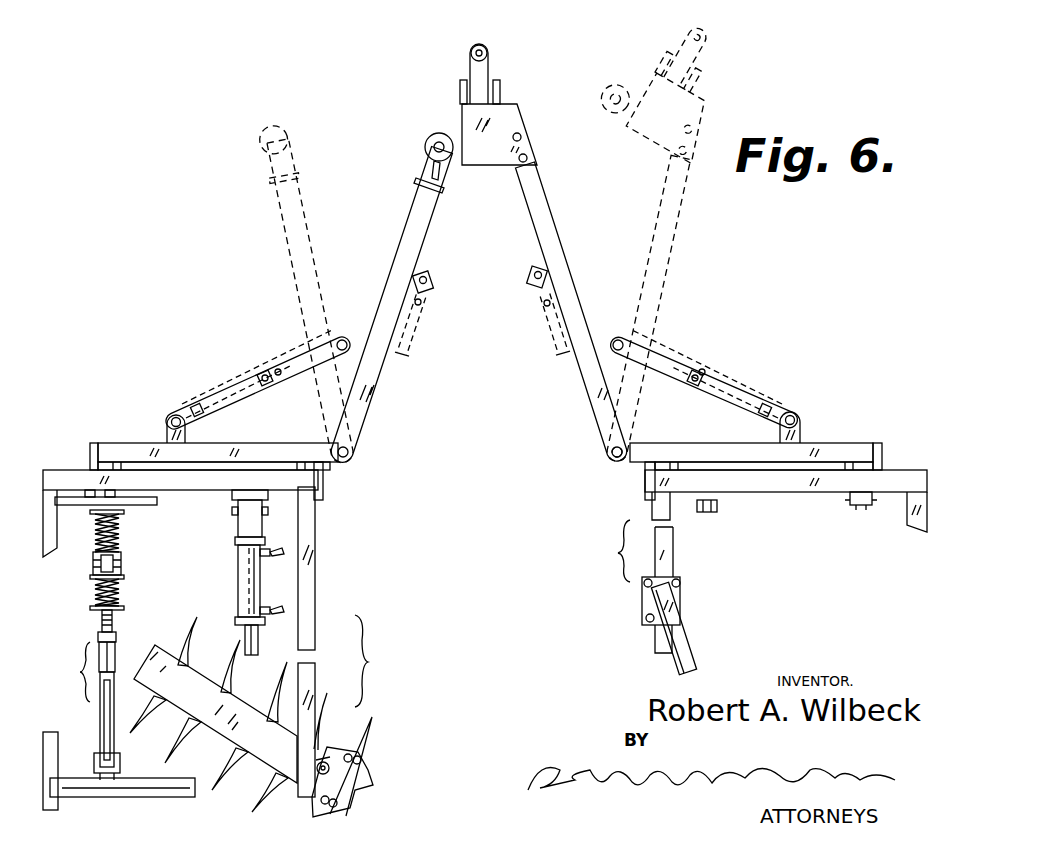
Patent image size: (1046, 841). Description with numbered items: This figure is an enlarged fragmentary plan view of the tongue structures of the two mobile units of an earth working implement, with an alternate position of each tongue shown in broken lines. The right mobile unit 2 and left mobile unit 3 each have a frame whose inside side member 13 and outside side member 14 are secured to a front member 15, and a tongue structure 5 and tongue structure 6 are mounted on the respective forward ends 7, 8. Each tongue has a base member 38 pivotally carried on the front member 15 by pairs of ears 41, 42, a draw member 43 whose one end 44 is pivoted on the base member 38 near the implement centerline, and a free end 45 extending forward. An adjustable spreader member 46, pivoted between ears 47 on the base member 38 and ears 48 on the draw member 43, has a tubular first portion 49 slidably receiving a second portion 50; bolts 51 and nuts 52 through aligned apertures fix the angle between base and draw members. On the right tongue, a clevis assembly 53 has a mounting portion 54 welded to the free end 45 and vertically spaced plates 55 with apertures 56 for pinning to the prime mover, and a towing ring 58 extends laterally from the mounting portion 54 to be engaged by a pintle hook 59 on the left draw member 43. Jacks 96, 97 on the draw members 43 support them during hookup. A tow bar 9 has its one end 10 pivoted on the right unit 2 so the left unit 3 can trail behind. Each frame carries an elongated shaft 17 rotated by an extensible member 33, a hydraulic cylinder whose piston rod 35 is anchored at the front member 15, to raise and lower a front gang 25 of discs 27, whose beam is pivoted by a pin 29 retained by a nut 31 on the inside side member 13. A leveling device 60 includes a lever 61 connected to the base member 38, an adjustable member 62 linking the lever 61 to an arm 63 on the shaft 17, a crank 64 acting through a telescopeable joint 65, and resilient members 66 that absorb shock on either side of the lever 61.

The right mobile unit 2 is at (646, 556).
The left mobile unit 3 is at (318, 572).
The tongue structure 5 is at (570, 275).
The tongue structure 6 is at (385, 262).
The forward end 7 is at (900, 470).
The forward end 8 is at (74, 475).
The tow bar 9 is at (688, 650).
The one end of tow bar 10 is at (680, 590).
The inside side member 13 is at (316, 673).
The outside side member 14 is at (56, 560).
The front member 15 is at (205, 480).
The elongated shaft 17 is at (162, 797).
The front gang 25 is at (378, 790).
The discs 27 is at (188, 632).
The pin 29 is at (326, 755).
The nut 31 is at (364, 762).
The extensible member 33 is at (242, 578).
The piston rod 35 is at (258, 641).
The base member 38 is at (130, 445).
The pair of ears 41 is at (90, 450).
The pair of ears 42 is at (325, 483).
The draw member 43 is at (540, 238).
The one end of draw member 44 is at (365, 445).
The free end of draw member 45 is at (438, 195).
The spreader member 46 is at (244, 374).
The ears 47 is at (160, 420).
The ears 48 is at (348, 338).
The tubular first portion 49 is at (300, 355).
The second portion 50 is at (238, 408).
The bolts 51 is at (270, 368).
The nuts 52 is at (256, 386).
The clevis assembly 53 is at (517, 130).
The mounting portion 54 is at (462, 117).
The vertically spaced plates 55 is at (487, 85).
The aperture 56 is at (481, 45).
The towing ring 58 is at (426, 147).
The pintle hook 59 is at (416, 181).
The leveling device 60 is at (105, 576).
The lever 61 is at (95, 505).
The adjustable member 62 is at (100, 718).
The arm 63 is at (120, 766).
The crank 64 is at (122, 530).
The telescopeable joint 65 is at (115, 656).
The resilient members 66 is at (93, 600).
The jack 96 is at (430, 290).
The jack 97 is at (530, 285).